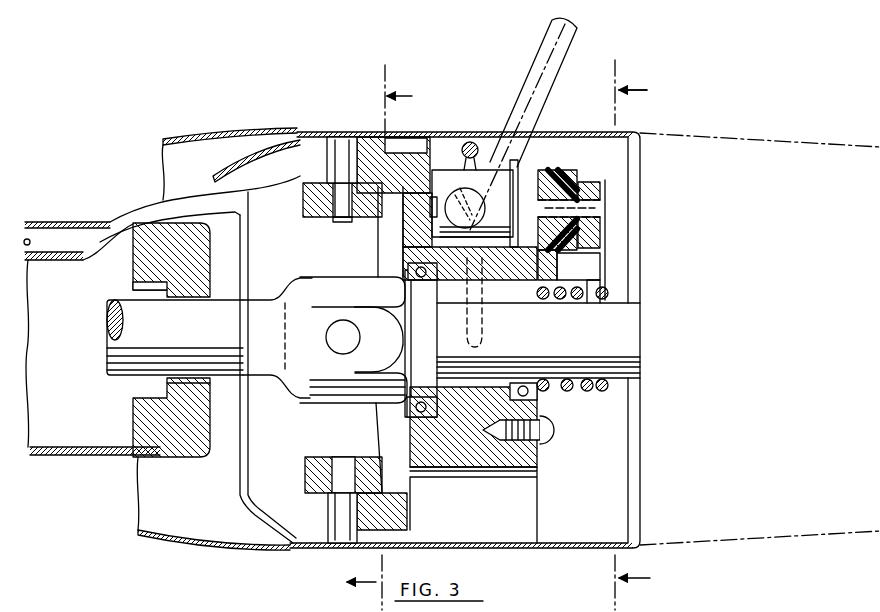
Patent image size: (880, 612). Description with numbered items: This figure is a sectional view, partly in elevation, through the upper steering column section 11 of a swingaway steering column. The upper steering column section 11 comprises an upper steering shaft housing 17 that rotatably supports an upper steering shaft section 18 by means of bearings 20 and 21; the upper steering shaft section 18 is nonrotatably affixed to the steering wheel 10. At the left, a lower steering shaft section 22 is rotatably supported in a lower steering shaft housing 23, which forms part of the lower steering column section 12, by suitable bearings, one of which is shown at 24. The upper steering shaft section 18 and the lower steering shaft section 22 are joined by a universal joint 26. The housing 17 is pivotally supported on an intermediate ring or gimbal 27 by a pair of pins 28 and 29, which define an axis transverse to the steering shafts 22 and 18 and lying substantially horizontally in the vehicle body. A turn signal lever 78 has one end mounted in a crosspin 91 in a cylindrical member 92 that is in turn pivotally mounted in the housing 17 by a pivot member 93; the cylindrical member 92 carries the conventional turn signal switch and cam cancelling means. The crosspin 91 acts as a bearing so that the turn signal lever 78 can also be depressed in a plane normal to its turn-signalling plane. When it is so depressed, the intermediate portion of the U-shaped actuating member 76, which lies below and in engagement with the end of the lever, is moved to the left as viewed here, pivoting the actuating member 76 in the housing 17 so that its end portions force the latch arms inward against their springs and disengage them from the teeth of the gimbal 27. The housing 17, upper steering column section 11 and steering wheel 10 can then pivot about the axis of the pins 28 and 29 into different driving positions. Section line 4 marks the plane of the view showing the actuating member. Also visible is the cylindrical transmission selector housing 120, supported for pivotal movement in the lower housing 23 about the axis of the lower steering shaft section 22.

The section line 4- 4 is at (643, 335).
The steering wheel 10 is at (294, 170).
The upper steering column section 11 is at (356, 129).
The lower steering column section 12 is at (215, 126).
The upper steering shaft housing 17 is at (417, 200).
The upper steering shaft section 18 is at (622, 338).
The bearing 20 is at (420, 284).
The bearing 21 is at (523, 298).
The lower steering shaft section 22 is at (140, 328).
The lower steering shaft housing 23 is at (147, 418).
The bearing 24 is at (140, 298).
The universal joint 26 is at (300, 385).
The intermediate ring or gimbal 27 is at (322, 220).
The pin 28 is at (347, 222).
The pin 29 is at (340, 528).
The U-shaped actuating member 76 is at (475, 138).
The turn signal lever 78 is at (533, 89).
The crosspin 91 is at (464, 270).
The cylindrical member 92 is at (498, 193).
The pivot member 93 is at (443, 190).
The transmission selector housing 120 is at (162, 545).